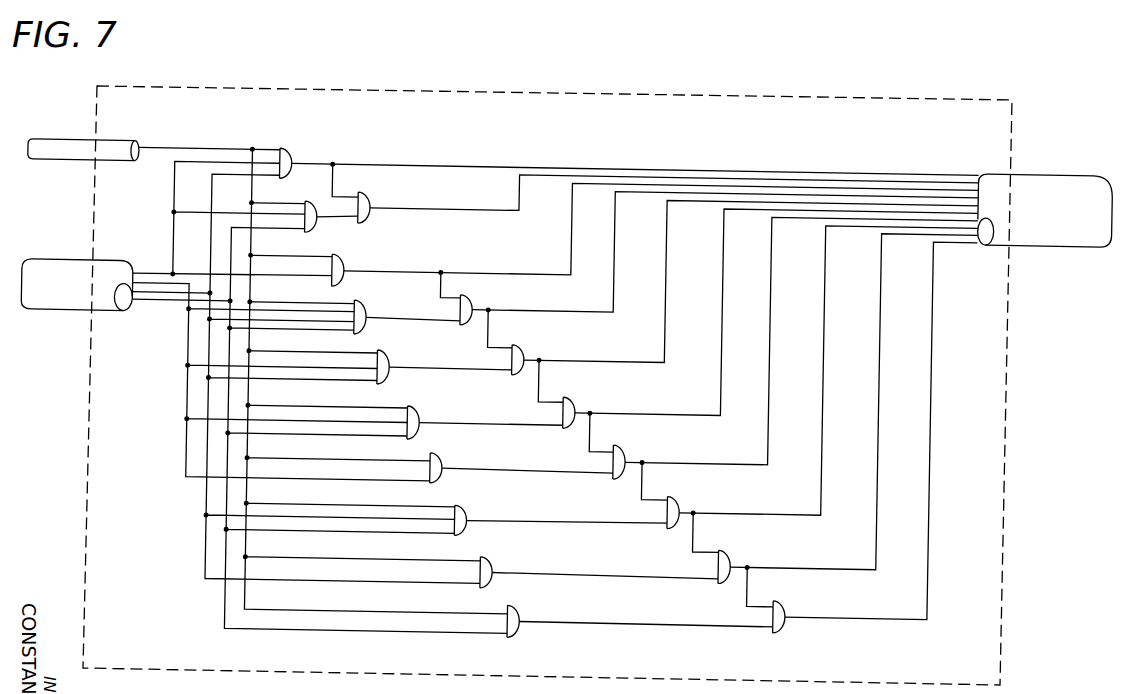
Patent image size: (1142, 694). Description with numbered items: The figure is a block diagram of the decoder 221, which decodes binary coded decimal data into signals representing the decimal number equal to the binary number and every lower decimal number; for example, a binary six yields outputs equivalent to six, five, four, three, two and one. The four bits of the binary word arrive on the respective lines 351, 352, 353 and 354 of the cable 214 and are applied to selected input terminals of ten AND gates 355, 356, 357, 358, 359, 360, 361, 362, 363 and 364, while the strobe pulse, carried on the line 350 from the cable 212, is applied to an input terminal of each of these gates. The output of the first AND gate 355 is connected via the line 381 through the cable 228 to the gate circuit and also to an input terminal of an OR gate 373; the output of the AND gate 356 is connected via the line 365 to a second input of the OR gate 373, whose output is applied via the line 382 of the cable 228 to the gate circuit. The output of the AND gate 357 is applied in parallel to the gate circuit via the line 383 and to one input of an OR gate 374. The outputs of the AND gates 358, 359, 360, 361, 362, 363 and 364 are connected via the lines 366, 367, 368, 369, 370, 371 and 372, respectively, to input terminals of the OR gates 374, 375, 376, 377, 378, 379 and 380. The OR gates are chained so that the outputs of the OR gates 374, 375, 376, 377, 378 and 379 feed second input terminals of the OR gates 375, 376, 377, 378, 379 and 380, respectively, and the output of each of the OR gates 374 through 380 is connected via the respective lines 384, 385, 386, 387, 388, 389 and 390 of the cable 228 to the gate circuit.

The cable 212 is at (38, 150).
The cable 214 is at (40, 318).
The decoder 221 is at (1011, 124).
The cable 228 is at (1023, 169).
The line 350 is at (170, 154).
The line 351 is at (229, 616).
The line 352 is at (208, 565).
The line 353 is at (188, 463).
The line 354 is at (171, 210).
The AND gate 355 is at (288, 182).
The AND gate 356 is at (310, 237).
The AND gate 357 is at (334, 287).
The AND gate 358 is at (361, 337).
The AND gate 359 is at (386, 390).
The AND gate 360 is at (412, 441).
The AND gate 361 is at (438, 487).
The AND gate 362 is at (462, 539).
The AND gate 363 is at (490, 590).
The AND gate 364 is at (514, 639).
The line 365 is at (342, 228).
The line 366 is at (426, 325).
The line 367 is at (470, 374).
The line 368 is at (511, 427).
The line 369 is at (551, 474).
The line 370 is at (592, 523).
The line 371 is at (638, 577).
The line 372 is at (681, 625).
The OR gate 373 is at (363, 199).
The OR gate 374 is at (467, 302).
The OR gate 375 is at (519, 349).
The OR gate 376 is at (578, 402).
The OR gate 377 is at (626, 446).
The OR gate 378 is at (682, 498).
The OR gate 379 is at (736, 550).
The OR gate 380 is at (789, 600).
The line 381 is at (436, 167).
The line 382 is at (465, 210).
The line 383 is at (524, 274).
The line 384 is at (564, 310).
The line 385 is at (615, 359).
The line 386 is at (673, 412).
The line 387 is at (719, 460).
The line 388 is at (773, 510).
The line 389 is at (826, 562).
The line 390 is at (874, 610).